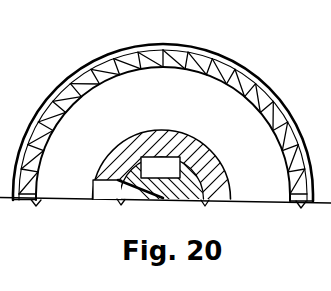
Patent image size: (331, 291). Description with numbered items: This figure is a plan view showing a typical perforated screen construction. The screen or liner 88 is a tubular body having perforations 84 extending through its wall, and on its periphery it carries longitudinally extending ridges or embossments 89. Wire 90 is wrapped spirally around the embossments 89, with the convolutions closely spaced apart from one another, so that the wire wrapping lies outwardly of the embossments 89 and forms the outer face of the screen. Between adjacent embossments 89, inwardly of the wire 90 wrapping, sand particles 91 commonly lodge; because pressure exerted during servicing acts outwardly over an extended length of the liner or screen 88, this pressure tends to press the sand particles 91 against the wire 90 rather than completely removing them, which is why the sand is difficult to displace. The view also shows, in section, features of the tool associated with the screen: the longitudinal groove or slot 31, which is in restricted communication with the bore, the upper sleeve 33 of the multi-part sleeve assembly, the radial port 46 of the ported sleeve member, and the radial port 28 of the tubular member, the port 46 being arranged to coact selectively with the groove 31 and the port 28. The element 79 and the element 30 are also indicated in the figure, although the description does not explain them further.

The screen or liner 88 is at (163, 112).
The ridges or embossments 89 is at (163, 43).
The wire 90 is at (206, 40).
The sand particles 91 is at (220, 56).
The perforations 84 is at (141, 68).
The base support 79 is at (330, 62).
The longitudinal groove or slot 31 is at (159, 175).
The upper sleeve 33 is at (205, 166).
The radial port 46 is at (100, 185).
The radial port 28 is at (123, 196).
The right mounting notch 30 is at (176, 202).